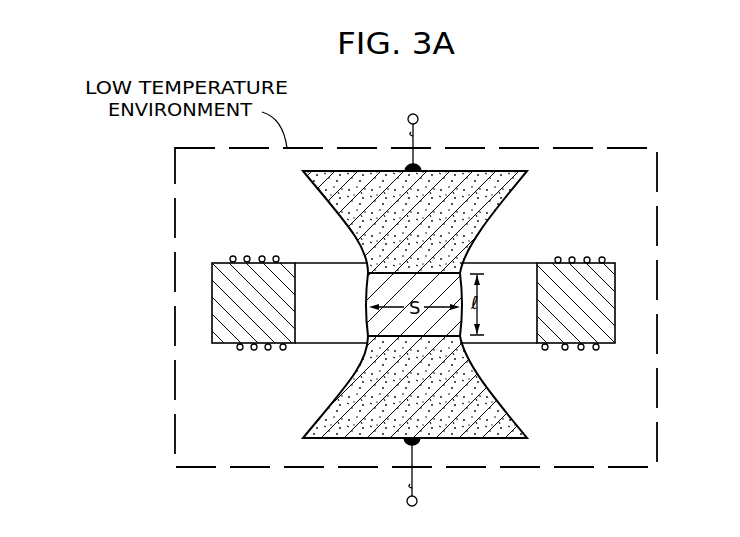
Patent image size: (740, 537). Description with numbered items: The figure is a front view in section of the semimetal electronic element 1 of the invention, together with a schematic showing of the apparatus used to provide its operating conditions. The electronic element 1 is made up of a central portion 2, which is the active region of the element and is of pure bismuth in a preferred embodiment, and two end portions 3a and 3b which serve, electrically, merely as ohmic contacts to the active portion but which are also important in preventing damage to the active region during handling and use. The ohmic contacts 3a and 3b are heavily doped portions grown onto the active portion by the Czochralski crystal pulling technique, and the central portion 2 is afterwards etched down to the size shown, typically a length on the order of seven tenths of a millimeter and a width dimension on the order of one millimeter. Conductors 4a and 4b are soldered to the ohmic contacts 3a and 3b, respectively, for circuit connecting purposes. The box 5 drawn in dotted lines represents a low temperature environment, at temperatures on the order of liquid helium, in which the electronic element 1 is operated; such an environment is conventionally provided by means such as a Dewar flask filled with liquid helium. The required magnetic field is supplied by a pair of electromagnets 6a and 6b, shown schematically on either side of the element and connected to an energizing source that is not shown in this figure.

The electronic element 1 is at (397, 304).
The central portion 2 is at (375, 318).
The ohmic contact 3a is at (497, 212).
The ohmic contact 3b is at (500, 398).
The conductor 4a is at (418, 134).
The conductor 4b is at (417, 486).
The low temperature environment 5 is at (660, 249).
The electromagnet 6a is at (228, 343).
The electromagnet 6b is at (606, 345).